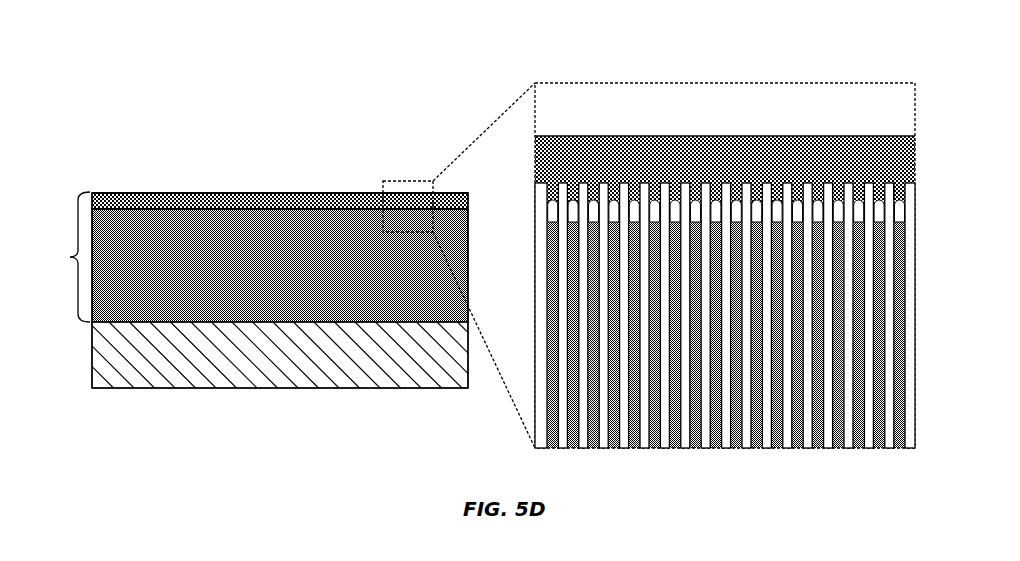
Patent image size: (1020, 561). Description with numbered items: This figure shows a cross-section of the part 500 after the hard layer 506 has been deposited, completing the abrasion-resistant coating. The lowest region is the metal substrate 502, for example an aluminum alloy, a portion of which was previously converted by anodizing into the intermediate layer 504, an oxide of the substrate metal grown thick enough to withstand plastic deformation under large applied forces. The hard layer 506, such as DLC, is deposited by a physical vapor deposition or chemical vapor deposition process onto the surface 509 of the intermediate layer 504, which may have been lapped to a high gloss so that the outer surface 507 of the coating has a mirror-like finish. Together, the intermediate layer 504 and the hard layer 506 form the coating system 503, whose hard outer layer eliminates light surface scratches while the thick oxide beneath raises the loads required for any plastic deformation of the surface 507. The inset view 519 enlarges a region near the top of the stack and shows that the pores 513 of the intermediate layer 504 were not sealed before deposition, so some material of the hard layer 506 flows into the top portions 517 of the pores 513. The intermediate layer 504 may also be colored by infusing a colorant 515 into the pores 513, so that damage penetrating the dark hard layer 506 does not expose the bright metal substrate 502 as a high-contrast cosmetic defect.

The part 500 is at (137, 160).
The metal substrate 502 is at (292, 364).
The coating system 503 is at (66, 257).
The intermediate layer 504 is at (292, 274).
The hard layer 506 is at (470, 199).
The surface 507 is at (263, 193).
The surface of intermediate layer 509 is at (304, 210).
The pores 513 is at (901, 213).
The colorant 515 is at (897, 316).
The top portions of pores 517 is at (905, 189).
The inset view 519 is at (790, 83).